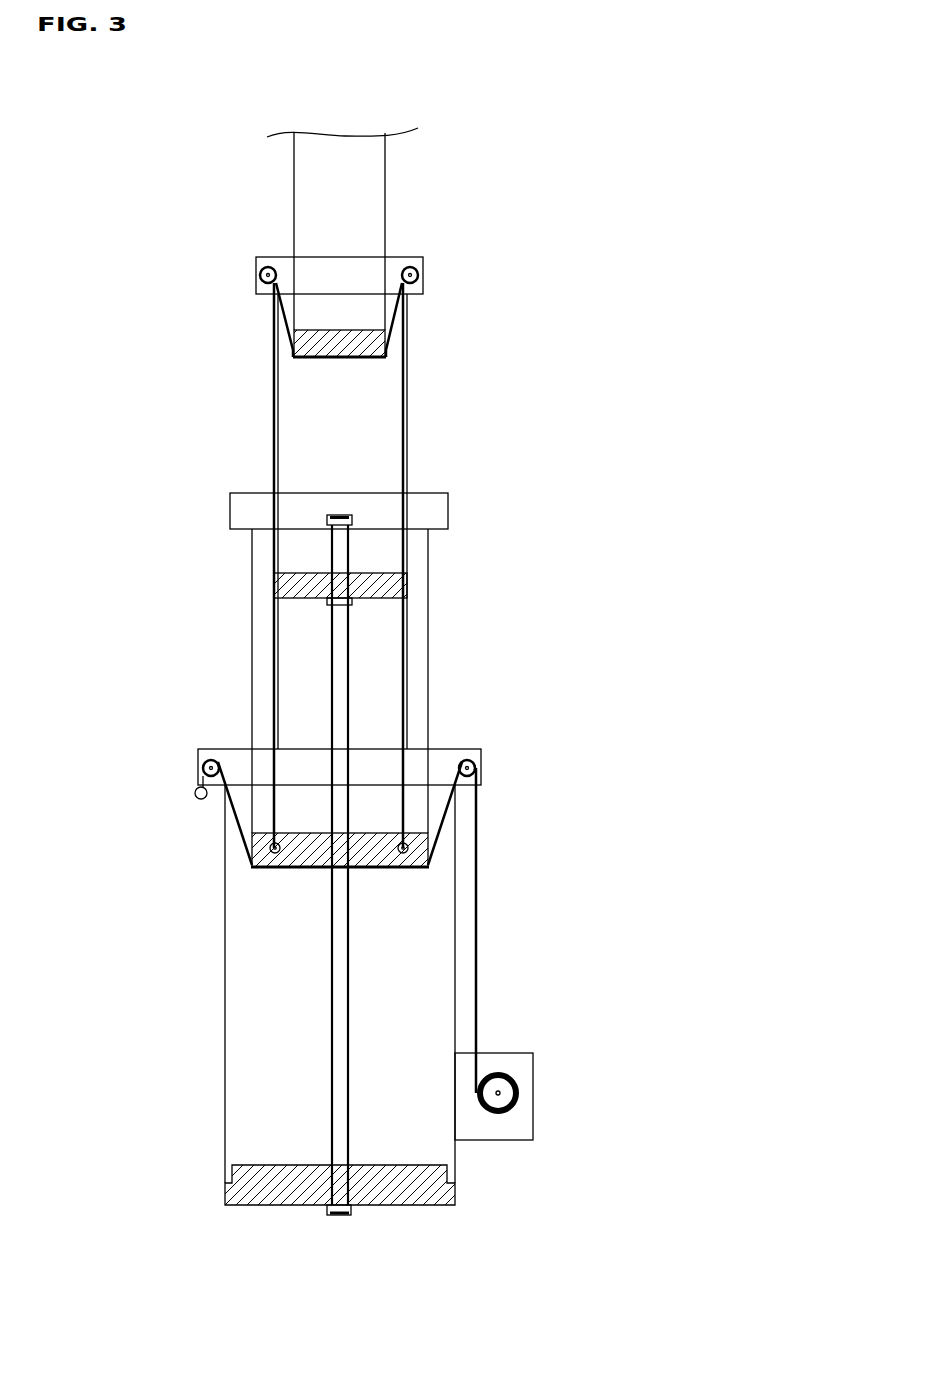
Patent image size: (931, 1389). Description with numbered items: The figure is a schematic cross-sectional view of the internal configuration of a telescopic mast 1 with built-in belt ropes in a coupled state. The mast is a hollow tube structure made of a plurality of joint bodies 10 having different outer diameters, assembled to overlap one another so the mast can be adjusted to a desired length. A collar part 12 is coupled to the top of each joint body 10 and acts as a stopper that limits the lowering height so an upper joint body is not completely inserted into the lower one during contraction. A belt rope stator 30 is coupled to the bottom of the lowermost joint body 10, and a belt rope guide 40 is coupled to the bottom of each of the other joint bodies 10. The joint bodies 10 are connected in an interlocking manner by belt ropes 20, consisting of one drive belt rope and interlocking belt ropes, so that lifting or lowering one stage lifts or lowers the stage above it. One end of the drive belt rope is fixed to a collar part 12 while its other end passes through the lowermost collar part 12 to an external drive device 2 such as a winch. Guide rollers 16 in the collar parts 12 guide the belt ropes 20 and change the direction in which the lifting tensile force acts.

The telescopic mast with built-in belt ropes 1 is at (177, 146).
The external drive device 2 is at (528, 1089).
The joint body 10 is at (370, 185).
The collar part 12 is at (418, 257).
The guide roller 16 is at (258, 275).
The belt rope 20 is at (272, 662).
The belt rope stator 30 is at (403, 1190).
The belt rope guide 40 is at (363, 345).